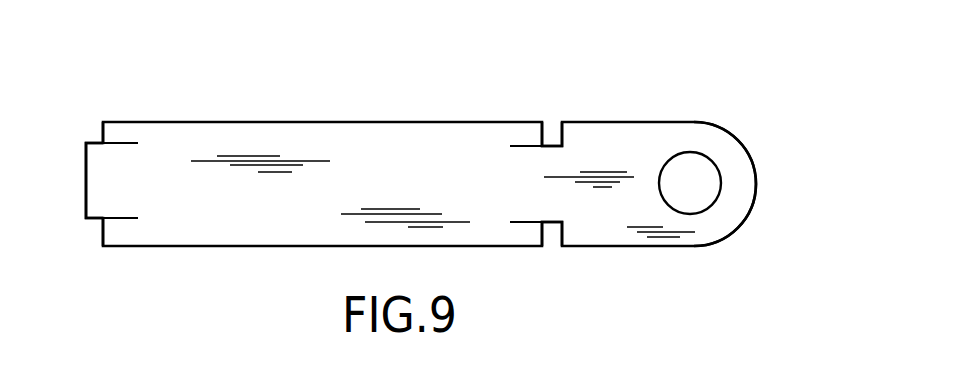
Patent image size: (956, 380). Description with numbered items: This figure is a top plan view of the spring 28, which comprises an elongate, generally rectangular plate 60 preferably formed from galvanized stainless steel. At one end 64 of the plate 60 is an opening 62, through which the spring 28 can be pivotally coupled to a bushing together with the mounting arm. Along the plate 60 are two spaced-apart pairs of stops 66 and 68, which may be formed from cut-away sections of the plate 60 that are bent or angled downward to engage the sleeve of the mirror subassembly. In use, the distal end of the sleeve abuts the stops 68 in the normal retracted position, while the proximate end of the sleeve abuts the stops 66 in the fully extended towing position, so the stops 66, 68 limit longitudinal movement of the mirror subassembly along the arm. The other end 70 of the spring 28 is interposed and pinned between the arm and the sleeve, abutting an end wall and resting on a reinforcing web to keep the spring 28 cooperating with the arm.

The spring 28 is at (454, 173).
The plate 60 is at (451, 148).
The opening 62 is at (700, 168).
The end of plate 64 is at (758, 191).
The stops 66 is at (117, 132).
The stops 68 is at (547, 122).
The end of spring 70 is at (83, 180).